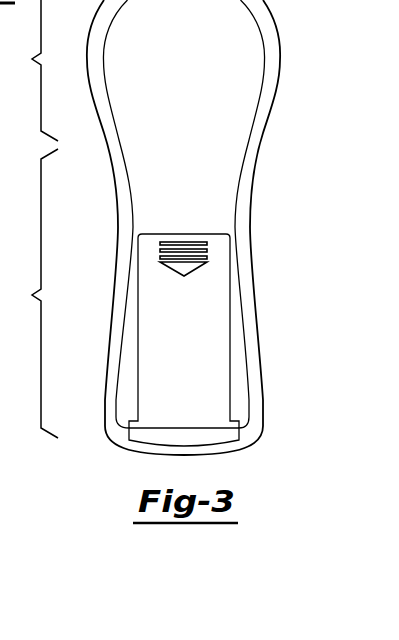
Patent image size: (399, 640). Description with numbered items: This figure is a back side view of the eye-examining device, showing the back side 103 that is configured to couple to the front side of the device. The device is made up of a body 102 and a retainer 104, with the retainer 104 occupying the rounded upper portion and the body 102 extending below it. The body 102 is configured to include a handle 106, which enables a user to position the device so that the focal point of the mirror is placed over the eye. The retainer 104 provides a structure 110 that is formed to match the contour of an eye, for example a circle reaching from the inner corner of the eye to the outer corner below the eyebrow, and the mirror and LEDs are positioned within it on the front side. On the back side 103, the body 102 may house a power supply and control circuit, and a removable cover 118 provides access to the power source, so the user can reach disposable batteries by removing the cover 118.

The body 102 is at (30, 293).
The retainer 104 is at (30, 70).
The structure 110 is at (268, 56).
The back side 103 is at (212, 150).
The handle 106 is at (258, 355).
The removable cover 118 is at (198, 388).